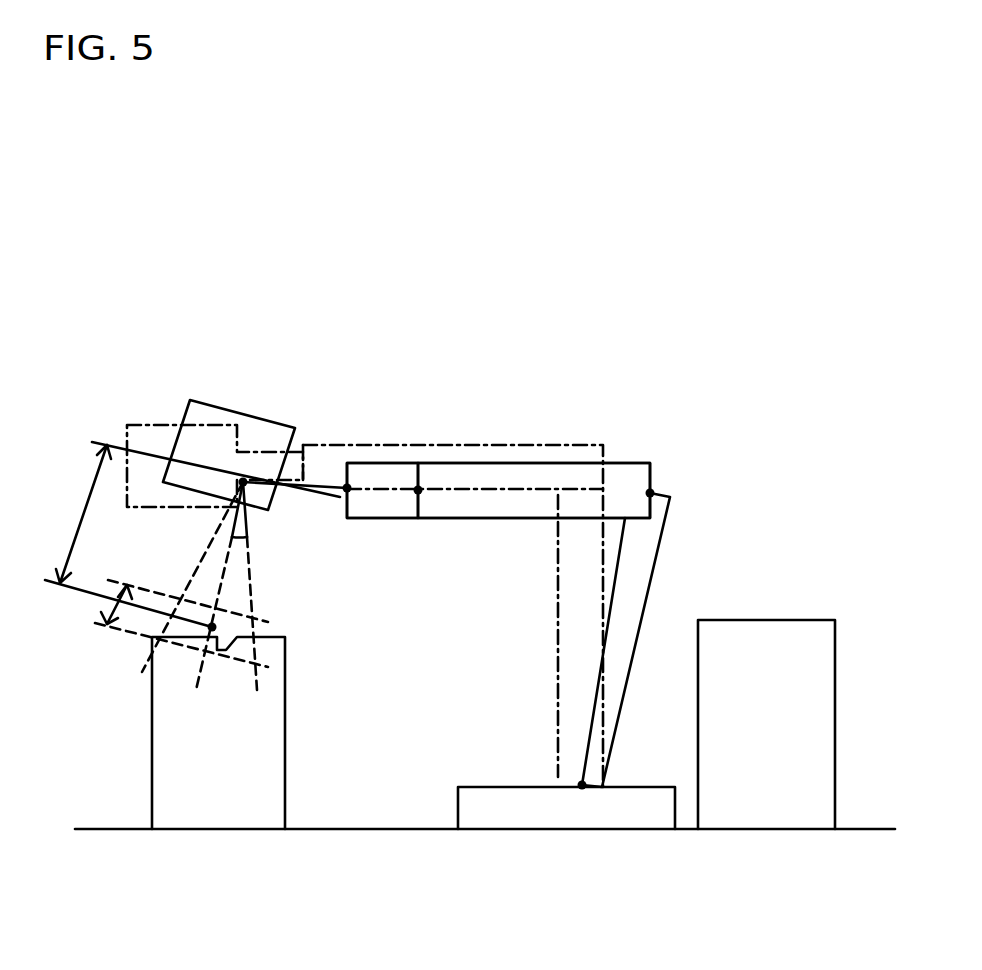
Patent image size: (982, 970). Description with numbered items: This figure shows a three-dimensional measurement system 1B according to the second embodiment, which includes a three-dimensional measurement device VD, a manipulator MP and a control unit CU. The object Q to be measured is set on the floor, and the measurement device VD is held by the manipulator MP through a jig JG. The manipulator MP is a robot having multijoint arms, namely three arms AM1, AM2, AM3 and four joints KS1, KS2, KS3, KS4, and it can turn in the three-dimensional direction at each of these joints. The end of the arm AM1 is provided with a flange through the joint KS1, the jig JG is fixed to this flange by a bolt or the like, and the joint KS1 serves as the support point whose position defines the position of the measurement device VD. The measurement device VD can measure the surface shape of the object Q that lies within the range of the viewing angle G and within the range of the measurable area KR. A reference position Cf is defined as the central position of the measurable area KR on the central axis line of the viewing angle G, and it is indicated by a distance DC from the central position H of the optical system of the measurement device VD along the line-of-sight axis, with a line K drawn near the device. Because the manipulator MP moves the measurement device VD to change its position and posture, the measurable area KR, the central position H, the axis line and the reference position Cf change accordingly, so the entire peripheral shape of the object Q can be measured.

The three-dimensional measurement system 1B is at (488, 223).
The workpiece reference line K is at (40, 380).
The three-dimensional measurement device VD is at (203, 400).
The central position of optical system H is at (243, 482).
The jig JG is at (313, 478).
The joint KS1 is at (348, 484).
The arm AM1 is at (395, 473).
The joint KS2 is at (420, 486).
The arm AM2 is at (517, 478).
The manipulator MP is at (634, 450).
The joint KS3 is at (655, 490).
The arm AM3 is at (647, 555).
The control unit CU is at (768, 620).
The joint KS4 is at (580, 785).
The object Q is at (286, 785).
The viewing angle G is at (244, 546).
The reference position Cf is at (222, 623).
The measurable area KR is at (104, 612).
The distance DC is at (123, 536).